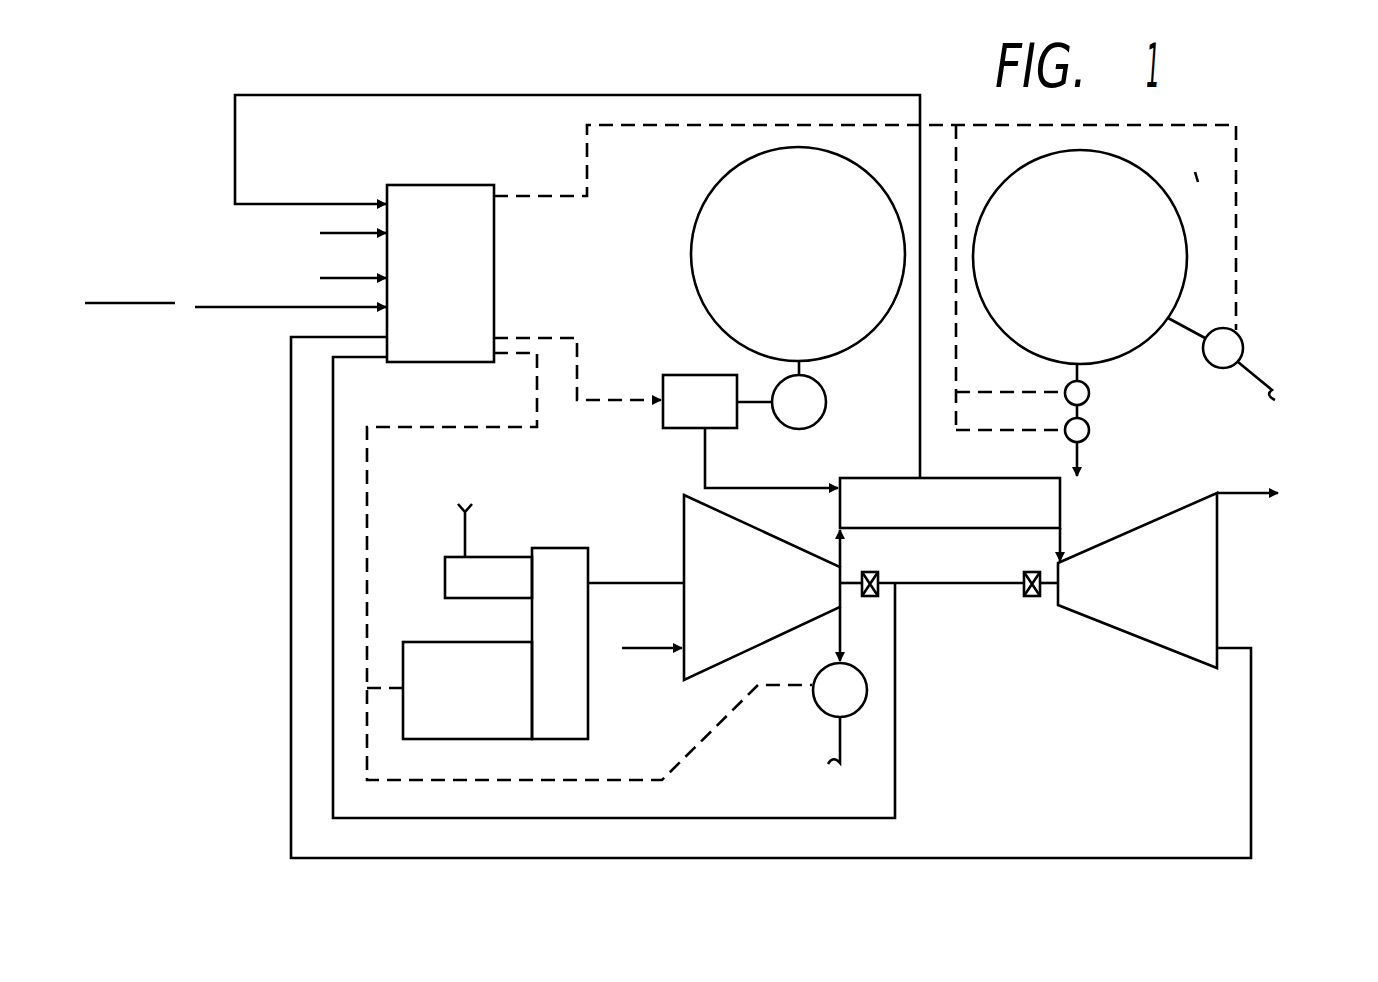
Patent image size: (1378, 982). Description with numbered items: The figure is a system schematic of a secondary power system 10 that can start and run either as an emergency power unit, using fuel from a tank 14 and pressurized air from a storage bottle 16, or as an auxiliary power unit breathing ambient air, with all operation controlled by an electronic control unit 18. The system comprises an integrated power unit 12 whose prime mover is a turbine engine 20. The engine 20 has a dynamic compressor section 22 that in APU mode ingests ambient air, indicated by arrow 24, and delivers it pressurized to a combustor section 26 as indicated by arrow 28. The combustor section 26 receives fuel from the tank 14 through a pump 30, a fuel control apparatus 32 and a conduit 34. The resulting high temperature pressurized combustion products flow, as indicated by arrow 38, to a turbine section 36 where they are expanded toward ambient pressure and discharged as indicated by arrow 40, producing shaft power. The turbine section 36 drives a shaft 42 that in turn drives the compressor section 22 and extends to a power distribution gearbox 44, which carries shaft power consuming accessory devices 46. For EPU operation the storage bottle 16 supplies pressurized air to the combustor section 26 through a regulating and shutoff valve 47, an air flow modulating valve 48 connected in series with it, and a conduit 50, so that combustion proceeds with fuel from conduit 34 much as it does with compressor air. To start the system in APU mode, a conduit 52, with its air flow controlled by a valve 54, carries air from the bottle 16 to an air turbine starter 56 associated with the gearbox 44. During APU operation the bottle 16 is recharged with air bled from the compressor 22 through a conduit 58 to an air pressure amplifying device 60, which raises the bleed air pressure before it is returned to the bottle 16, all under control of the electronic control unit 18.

The secondary power system 10 is at (1300, 108).
The integrated power unit 12 is at (683, 775).
The fuel tank 14 is at (798, 261).
The pressurized air storage bottle 16 is at (1080, 265).
The electronic control unit 18 is at (801, 452).
The turbine engine 20 is at (1020, 657).
The dynamic compressor section 22 is at (762, 587).
The ambient air inlet arrow 24 is at (640, 650).
The combustor section 26 is at (950, 503).
The pressurized air delivery arrow 28 is at (845, 560).
The fuel pump 30 is at (860, 400).
The fuel control apparatus 32 is at (717, 401).
The fuel conduit 34 is at (705, 470).
The turbine section 36 is at (1137, 580).
The combustion products flow arrow 38 is at (1062, 537).
The turbine discharge arrow 40 is at (1280, 494).
The shaft 42 is at (632, 583).
The power distribution gearbox 44 is at (580, 548).
The accessory devices 46 is at (478, 740).
The regulating and shutoff valve 47 is at (1089, 393).
The air flow modulating valve 48 is at (1089, 430).
The air conduit 50 is at (1080, 462).
The starter air conduit 52 is at (1280, 390).
The starter air valve 54 is at (1243, 336).
The air turbine starter 56 is at (445, 583).
The bleed air conduit 58 is at (1195, 172).
The air pressure amplifying device 60 is at (825, 712).